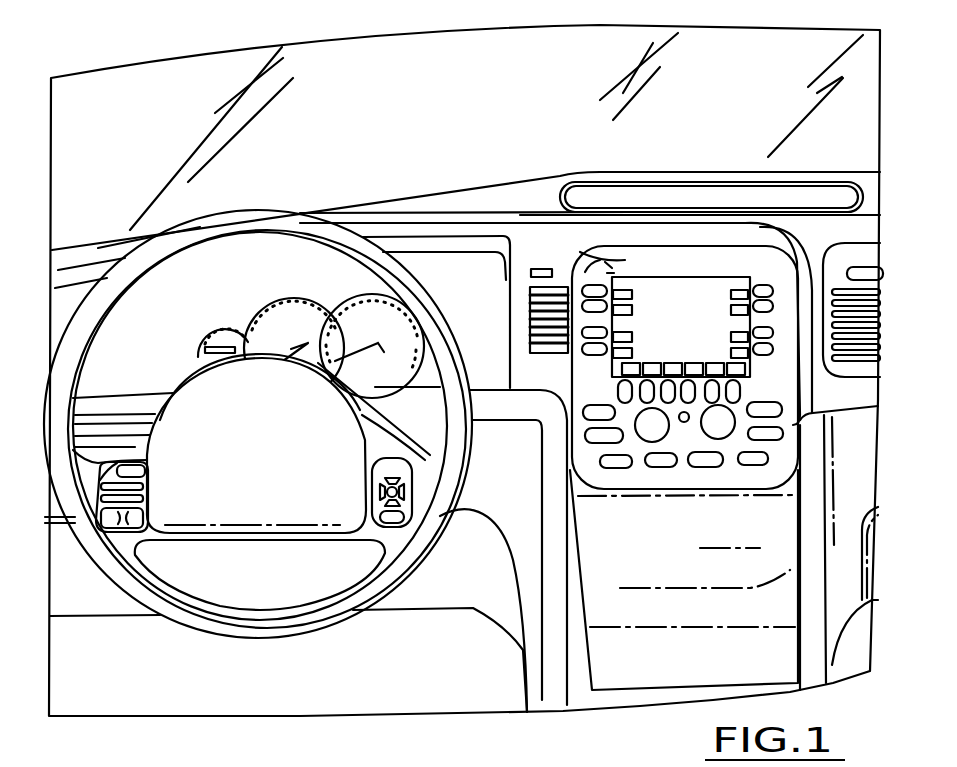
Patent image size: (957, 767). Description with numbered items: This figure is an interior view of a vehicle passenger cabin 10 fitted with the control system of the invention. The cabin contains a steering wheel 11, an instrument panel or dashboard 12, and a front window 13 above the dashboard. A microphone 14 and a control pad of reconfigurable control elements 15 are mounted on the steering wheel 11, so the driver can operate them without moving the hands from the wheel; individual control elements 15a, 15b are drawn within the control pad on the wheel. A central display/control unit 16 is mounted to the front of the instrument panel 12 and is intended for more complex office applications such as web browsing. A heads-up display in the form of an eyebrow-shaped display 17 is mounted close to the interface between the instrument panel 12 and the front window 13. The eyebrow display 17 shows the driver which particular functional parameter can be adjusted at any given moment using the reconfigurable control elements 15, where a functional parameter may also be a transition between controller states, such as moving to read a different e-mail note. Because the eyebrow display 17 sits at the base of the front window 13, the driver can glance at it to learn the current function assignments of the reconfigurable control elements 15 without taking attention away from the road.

The passenger cabin 10 is at (108, 60).
The steering wheel 11 is at (124, 263).
The instrument panel 12 is at (458, 277).
The front window 13 is at (213, 67).
The microphone 14 is at (347, 363).
The reconfigurable control elements 15 is at (404, 508).
The push button 15a is at (395, 526).
The rocker switch 15b is at (405, 490).
The central display/control unit 16 is at (680, 490).
The eyebrow-shaped display 17 is at (630, 170).